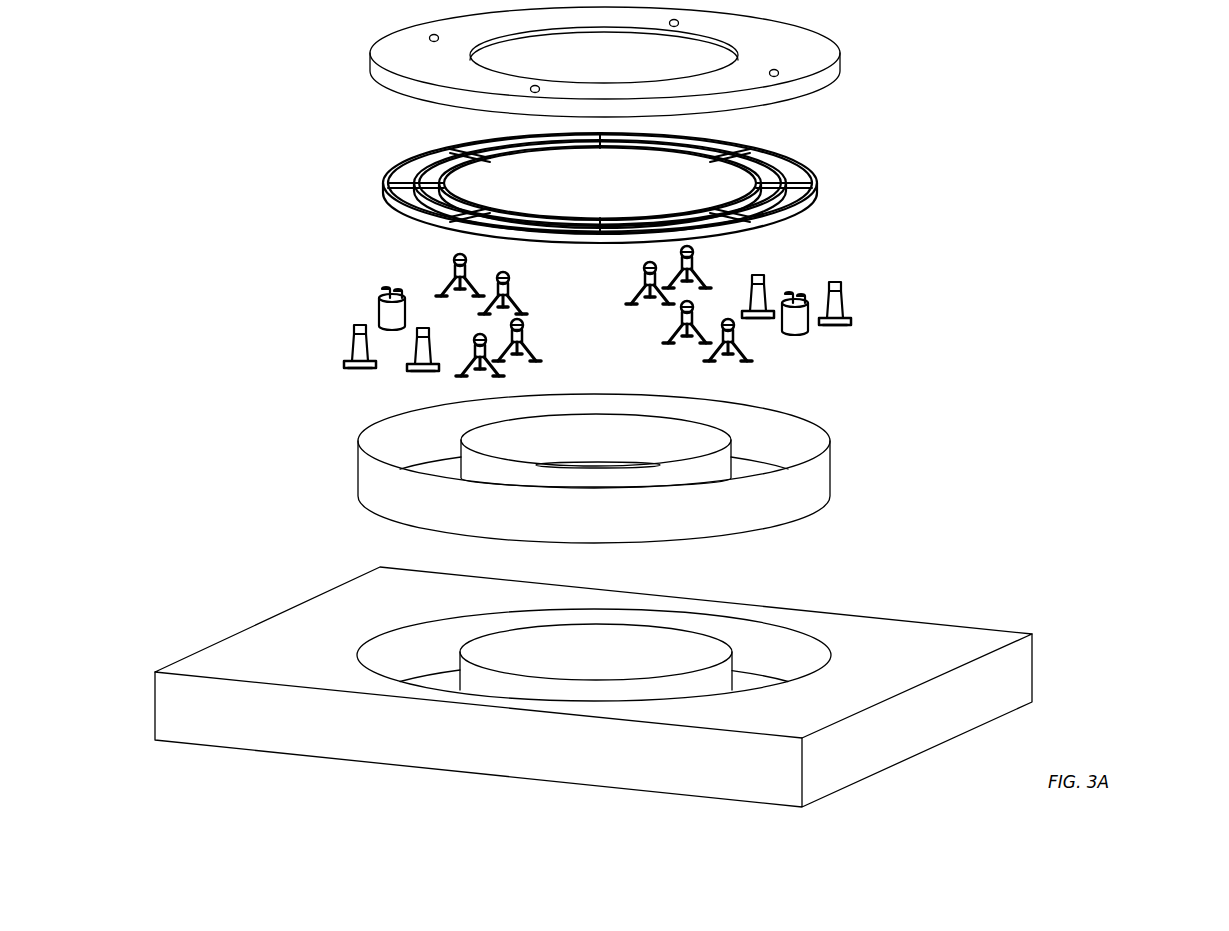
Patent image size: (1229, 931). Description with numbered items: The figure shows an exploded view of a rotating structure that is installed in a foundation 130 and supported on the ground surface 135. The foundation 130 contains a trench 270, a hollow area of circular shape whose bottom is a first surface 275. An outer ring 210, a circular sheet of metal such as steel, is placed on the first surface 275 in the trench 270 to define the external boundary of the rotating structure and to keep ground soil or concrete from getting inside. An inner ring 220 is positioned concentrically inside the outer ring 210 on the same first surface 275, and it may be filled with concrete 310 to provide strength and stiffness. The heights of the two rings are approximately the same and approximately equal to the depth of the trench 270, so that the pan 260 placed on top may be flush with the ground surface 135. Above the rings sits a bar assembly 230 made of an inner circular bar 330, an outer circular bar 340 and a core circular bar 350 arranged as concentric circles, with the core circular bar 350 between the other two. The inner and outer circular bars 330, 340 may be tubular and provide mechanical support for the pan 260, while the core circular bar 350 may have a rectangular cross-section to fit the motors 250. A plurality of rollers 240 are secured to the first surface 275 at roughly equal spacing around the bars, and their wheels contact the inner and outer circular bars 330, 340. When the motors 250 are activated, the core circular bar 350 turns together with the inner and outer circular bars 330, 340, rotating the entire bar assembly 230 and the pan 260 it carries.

The pan 260 is at (813, 47).
The bar assembly 230 is at (788, 186).
The inner circular bar 330 is at (736, 146).
The core circular bar 350 is at (808, 178).
The outer circular bar 340 is at (817, 197).
The rollers 240 is at (702, 268).
The motors 250 is at (808, 333).
The inner ring 220 is at (690, 434).
The outer ring 210 is at (812, 485).
The trench 270 is at (435, 650).
The first surface 275 is at (748, 676).
The ground surface 135 is at (933, 630).
The foundation 130 is at (687, 667).
The concrete 310 is at (527, 660).